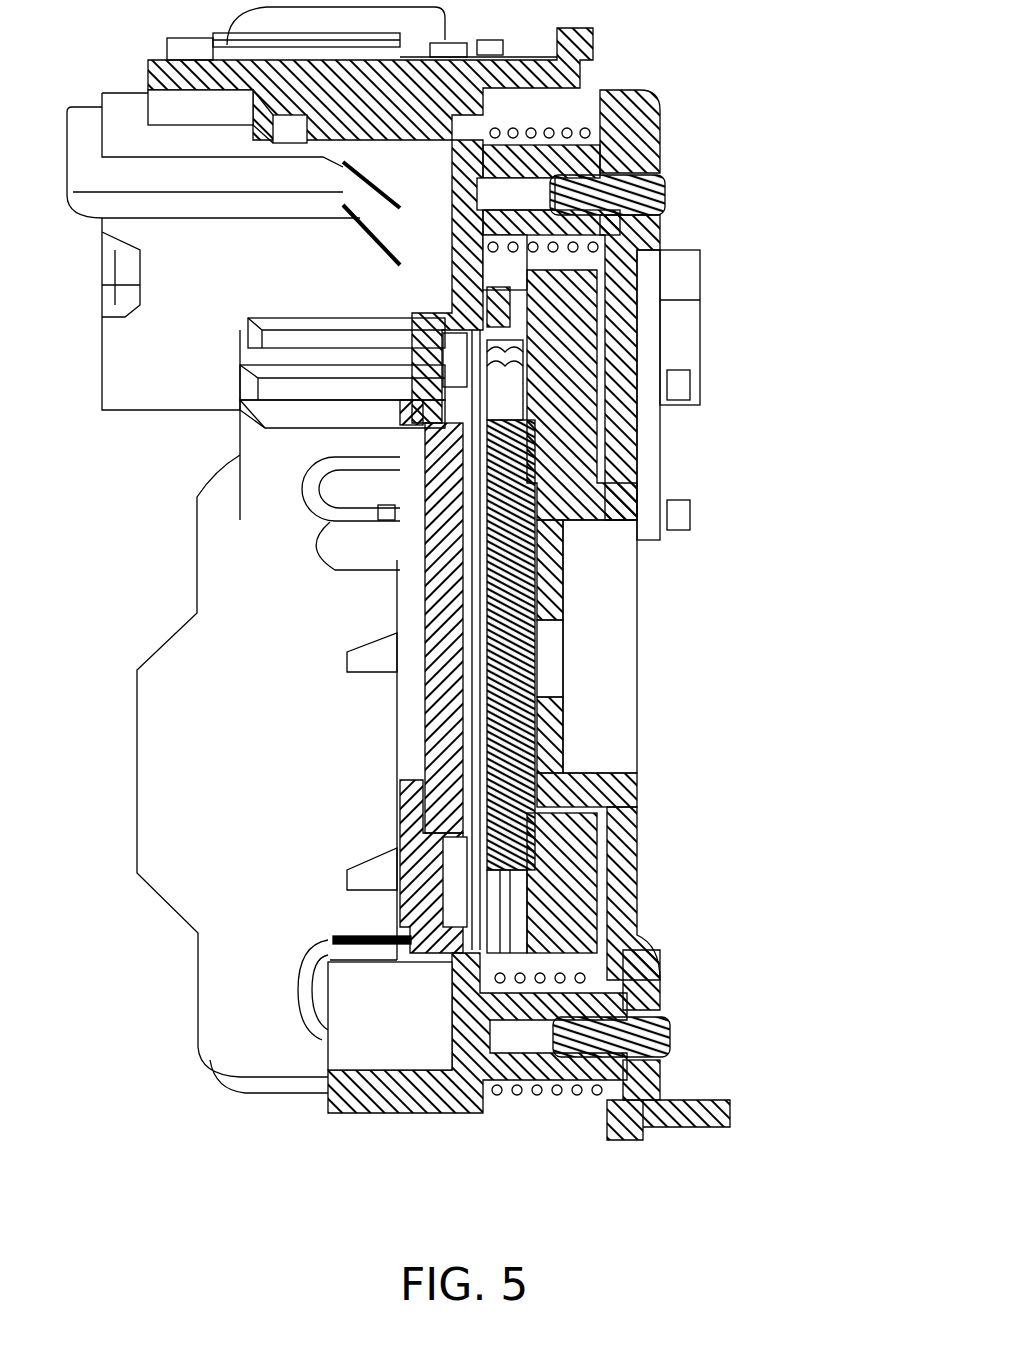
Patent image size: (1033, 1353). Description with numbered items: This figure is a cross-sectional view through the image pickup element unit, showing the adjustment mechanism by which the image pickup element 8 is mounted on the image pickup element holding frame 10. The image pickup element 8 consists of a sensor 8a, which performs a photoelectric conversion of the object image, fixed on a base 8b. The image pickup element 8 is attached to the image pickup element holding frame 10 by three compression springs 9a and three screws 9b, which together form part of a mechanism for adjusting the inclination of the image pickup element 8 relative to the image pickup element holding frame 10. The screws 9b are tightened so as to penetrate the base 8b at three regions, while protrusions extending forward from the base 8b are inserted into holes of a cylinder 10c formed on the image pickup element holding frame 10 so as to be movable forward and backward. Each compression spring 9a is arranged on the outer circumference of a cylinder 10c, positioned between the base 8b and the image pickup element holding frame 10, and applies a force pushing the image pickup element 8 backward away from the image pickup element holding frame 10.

The image pickup element 8 is at (647, 645).
The sensor 8a is at (527, 665).
The base 8b is at (638, 910).
The compression spring 9a is at (573, 135).
The screw 9b is at (647, 190).
The image pickup element holding frame 10 is at (443, 1097).
The cylinder 10c is at (552, 140).